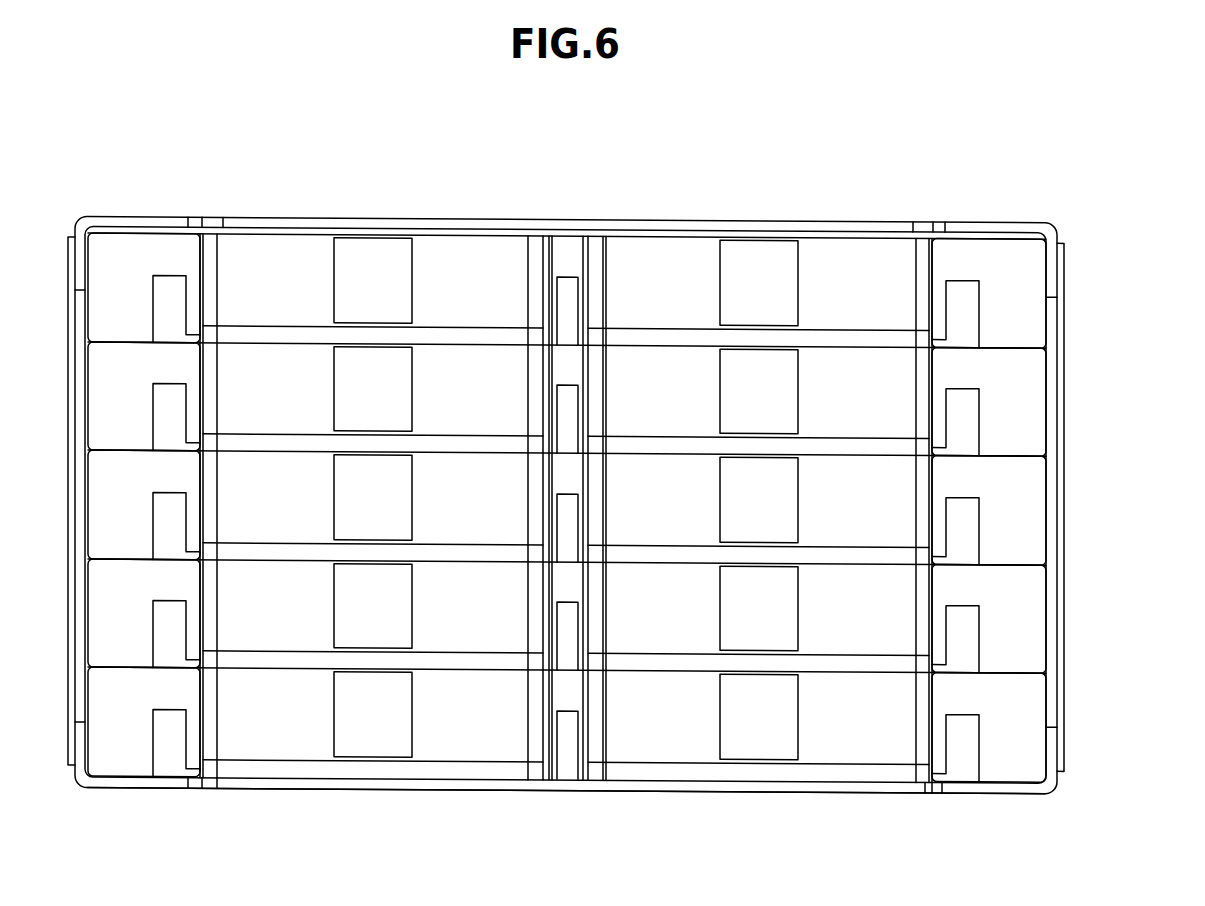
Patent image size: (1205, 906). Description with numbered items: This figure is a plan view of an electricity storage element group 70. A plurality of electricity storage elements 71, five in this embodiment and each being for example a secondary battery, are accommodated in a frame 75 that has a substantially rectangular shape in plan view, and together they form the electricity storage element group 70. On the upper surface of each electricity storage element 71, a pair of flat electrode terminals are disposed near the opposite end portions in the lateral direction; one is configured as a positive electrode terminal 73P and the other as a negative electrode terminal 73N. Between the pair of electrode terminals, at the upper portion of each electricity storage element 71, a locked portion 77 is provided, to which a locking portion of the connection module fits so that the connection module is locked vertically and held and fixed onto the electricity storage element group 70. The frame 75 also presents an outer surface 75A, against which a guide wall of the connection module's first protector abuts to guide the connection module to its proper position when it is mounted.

The electricity storage element group 70 is at (637, 504).
The electricity storage element 71 is at (1023, 401).
The negative electrode terminal 73N is at (373, 263).
The positive electrode terminal 73P is at (758, 260).
The frame 75 is at (967, 782).
The outer surface 75A is at (623, 786).
The locked portion 77 is at (555, 747).